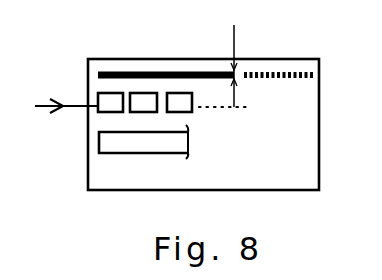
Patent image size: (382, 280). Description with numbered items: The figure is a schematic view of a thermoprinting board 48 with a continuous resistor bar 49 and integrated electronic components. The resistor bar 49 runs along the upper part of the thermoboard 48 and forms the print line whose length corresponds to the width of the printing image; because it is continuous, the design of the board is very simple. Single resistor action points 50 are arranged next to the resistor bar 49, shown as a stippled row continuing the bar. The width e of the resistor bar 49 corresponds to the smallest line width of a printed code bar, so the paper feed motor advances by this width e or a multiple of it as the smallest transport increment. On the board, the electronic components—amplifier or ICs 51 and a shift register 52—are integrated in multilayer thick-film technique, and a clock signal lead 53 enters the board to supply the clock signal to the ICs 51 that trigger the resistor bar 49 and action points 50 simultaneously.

The thermoprinting board 48 is at (312, 142).
The resistor bar 49 is at (168, 74).
The single resistor action points 50 is at (275, 86).
The amplifier or ICs 51 is at (107, 98).
The shift register 52 is at (107, 143).
The clock signal lead 53 is at (35, 107).
The width of resistor bar e is at (239, 66).